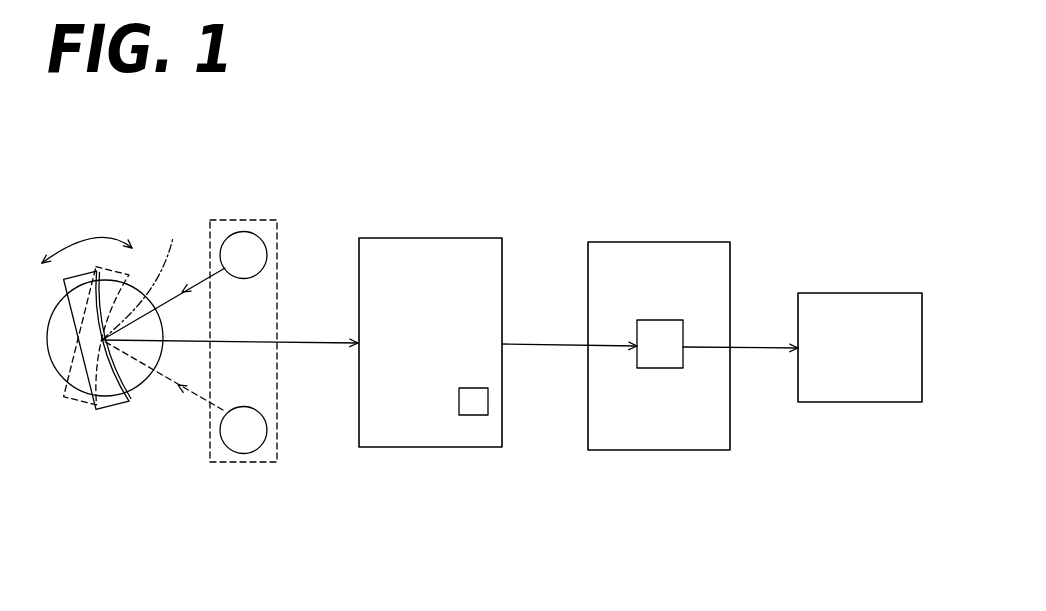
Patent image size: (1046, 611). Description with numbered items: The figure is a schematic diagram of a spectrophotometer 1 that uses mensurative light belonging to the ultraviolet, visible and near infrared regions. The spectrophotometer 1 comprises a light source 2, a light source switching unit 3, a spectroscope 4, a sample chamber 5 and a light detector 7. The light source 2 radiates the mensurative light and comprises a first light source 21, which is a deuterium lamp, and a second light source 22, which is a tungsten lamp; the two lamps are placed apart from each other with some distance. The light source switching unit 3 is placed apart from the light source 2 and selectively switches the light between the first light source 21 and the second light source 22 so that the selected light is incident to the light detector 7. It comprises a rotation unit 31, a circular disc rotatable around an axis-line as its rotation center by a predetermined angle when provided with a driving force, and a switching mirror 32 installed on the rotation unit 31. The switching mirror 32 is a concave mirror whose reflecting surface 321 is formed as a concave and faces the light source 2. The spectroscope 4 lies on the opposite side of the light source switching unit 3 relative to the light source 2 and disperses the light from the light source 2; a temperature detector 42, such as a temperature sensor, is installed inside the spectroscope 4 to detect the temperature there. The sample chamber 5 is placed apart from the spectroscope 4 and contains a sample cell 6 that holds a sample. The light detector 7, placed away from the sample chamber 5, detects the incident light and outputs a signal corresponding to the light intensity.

The spectrophotometer 1 is at (807, 197).
The light source 2 is at (222, 465).
The first light source 21 is at (248, 233).
The second light source 22 is at (258, 452).
The light source switching unit 3 is at (47, 363).
The rotation unit 31 is at (127, 382).
The switching mirror 32 is at (113, 407).
The reflecting surface 321 is at (128, 400).
The spectroscope 4 is at (467, 238).
The temperature detector 42 is at (473, 415).
The sample chamber 5 is at (698, 242).
The sample cell 6 is at (663, 368).
The light detector 7 is at (853, 293).